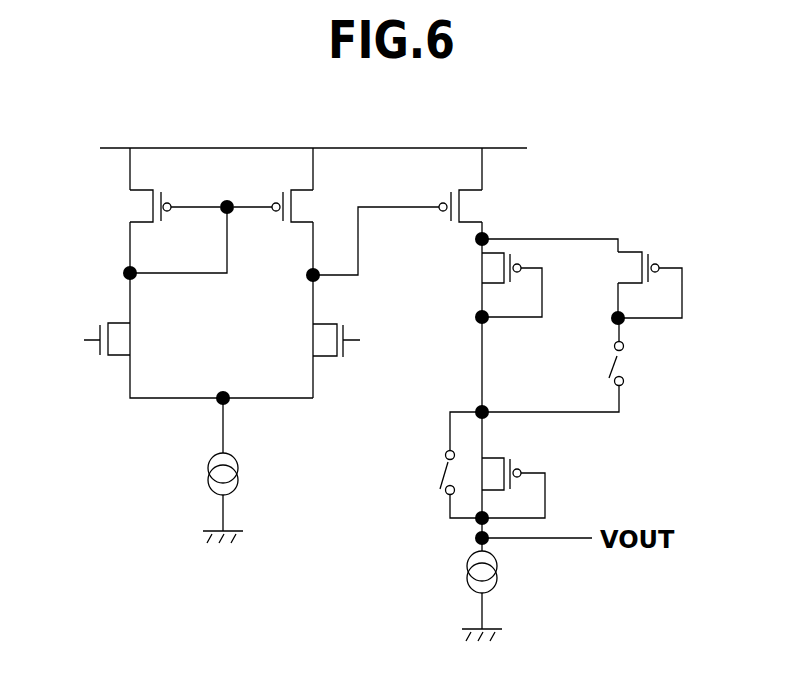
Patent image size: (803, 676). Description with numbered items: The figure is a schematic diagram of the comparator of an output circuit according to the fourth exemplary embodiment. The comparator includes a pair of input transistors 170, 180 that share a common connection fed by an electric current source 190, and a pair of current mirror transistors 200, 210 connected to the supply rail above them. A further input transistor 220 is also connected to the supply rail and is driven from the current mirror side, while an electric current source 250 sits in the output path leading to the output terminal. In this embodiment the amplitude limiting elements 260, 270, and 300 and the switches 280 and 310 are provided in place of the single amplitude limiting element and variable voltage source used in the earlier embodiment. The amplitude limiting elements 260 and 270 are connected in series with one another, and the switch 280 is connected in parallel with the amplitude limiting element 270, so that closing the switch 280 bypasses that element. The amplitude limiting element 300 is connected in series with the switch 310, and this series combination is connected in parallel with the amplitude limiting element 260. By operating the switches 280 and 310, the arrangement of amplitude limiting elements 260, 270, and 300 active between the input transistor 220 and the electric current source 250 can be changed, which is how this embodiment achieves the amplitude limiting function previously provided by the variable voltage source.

The input transistor 170 is at (100, 358).
The input transistor 180 is at (343, 357).
The electric current source 190 is at (208, 487).
The current mirror transistor 200 is at (130, 207).
The current mirror transistor 210 is at (308, 207).
The input transistor 220 is at (486, 207).
The electric current source 250 is at (466, 580).
The amplitude limiting element 260 is at (480, 268).
The amplitude limiting element 270 is at (512, 457).
The switch 280 is at (437, 472).
The amplitude limiting element 300 is at (645, 252).
The switch 310 is at (632, 363).